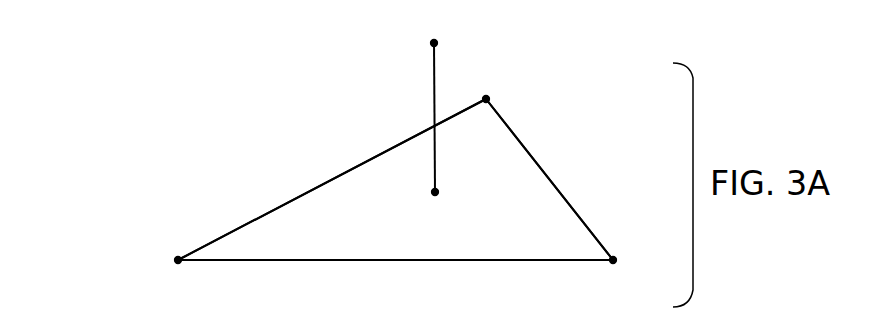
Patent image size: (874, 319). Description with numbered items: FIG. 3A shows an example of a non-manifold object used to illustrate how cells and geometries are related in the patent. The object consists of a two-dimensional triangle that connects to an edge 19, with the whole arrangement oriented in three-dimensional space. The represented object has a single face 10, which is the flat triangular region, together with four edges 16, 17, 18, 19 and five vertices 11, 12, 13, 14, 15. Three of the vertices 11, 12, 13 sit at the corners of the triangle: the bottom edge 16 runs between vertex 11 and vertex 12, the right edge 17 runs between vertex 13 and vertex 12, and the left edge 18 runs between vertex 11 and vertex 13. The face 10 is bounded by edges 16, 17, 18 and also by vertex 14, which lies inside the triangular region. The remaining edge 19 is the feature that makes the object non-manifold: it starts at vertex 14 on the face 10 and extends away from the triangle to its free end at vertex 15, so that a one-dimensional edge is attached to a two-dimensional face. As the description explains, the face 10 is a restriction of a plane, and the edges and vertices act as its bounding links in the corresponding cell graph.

The face 10 is at (391, 219).
The vertex 11 is at (176, 259).
The vertex 12 is at (616, 258).
The vertex 13 is at (487, 100).
The vertex 14 is at (435, 194).
The vertex 15 is at (433, 43).
The edge 16 is at (378, 261).
The edge 17 is at (557, 187).
The edge 18 is at (327, 181).
The edge 19 is at (433, 94).